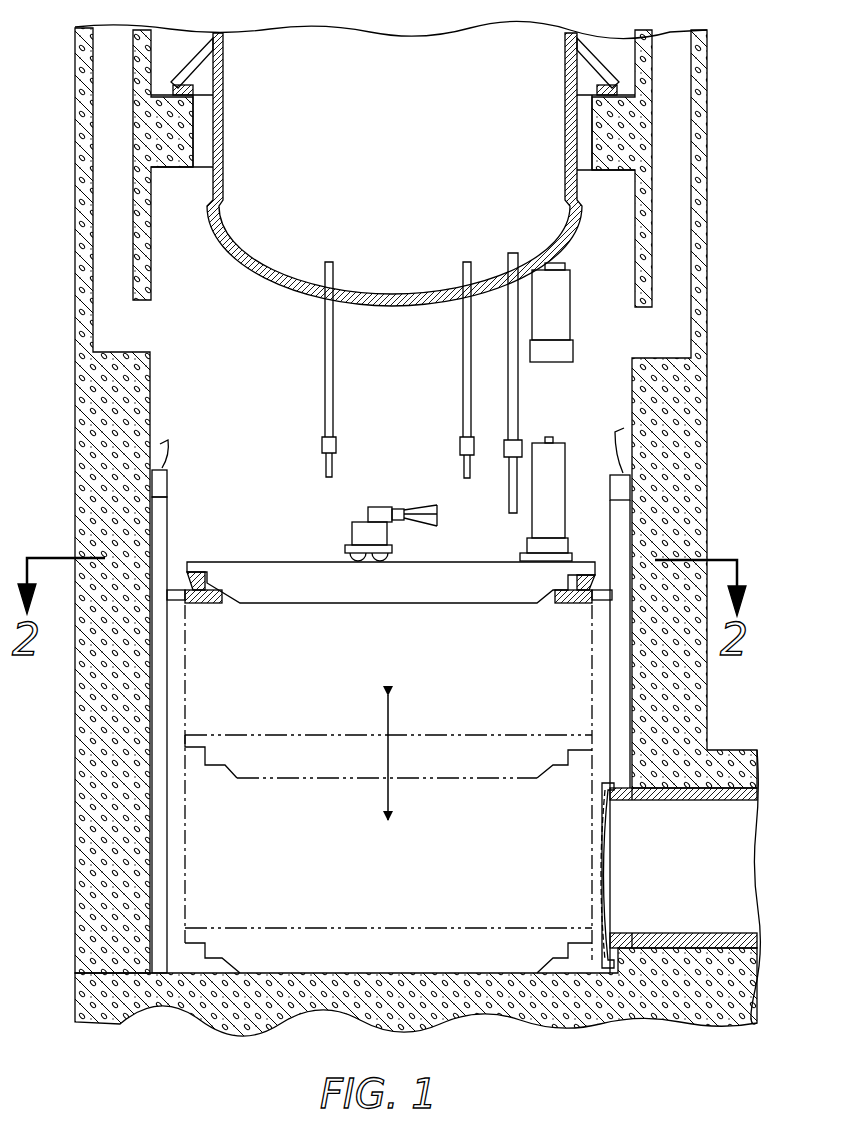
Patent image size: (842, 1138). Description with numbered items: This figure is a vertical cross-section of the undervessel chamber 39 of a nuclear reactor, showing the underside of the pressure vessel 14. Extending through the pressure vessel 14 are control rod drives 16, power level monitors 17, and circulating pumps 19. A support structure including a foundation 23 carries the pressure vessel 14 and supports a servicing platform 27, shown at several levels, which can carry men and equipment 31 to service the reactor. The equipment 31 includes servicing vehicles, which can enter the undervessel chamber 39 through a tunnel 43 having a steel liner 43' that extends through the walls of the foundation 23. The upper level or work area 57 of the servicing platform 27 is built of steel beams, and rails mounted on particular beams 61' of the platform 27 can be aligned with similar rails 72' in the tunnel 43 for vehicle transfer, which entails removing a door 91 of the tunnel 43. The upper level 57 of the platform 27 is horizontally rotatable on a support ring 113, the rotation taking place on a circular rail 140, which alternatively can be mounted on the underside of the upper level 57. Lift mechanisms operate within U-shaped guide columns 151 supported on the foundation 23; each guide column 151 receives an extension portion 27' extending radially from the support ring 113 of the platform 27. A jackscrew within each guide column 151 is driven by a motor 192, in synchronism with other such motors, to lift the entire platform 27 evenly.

The pressure vessel 14 is at (240, 244).
The control rod drives 16 is at (519, 393).
The power level monitors 17 is at (334, 392).
The circulating pumps 19 is at (571, 313).
The foundation 23 is at (708, 320).
The servicing platform 27 is at (362, 742).
The extension portion 27' is at (388, 782).
The equipment 31 is at (351, 537).
The undervessel chamber 39 is at (238, 356).
The tunnel 43 is at (683, 868).
The steel liner 43' is at (667, 812).
The upper level 57 is at (283, 560).
The beams 61' is at (422, 775).
The rails 72' is at (684, 920).
The door 91 is at (598, 830).
The support ring 113 is at (193, 605).
The circular rail 140 is at (193, 578).
The guide columns 151 is at (167, 862).
The motor 192 is at (168, 484).